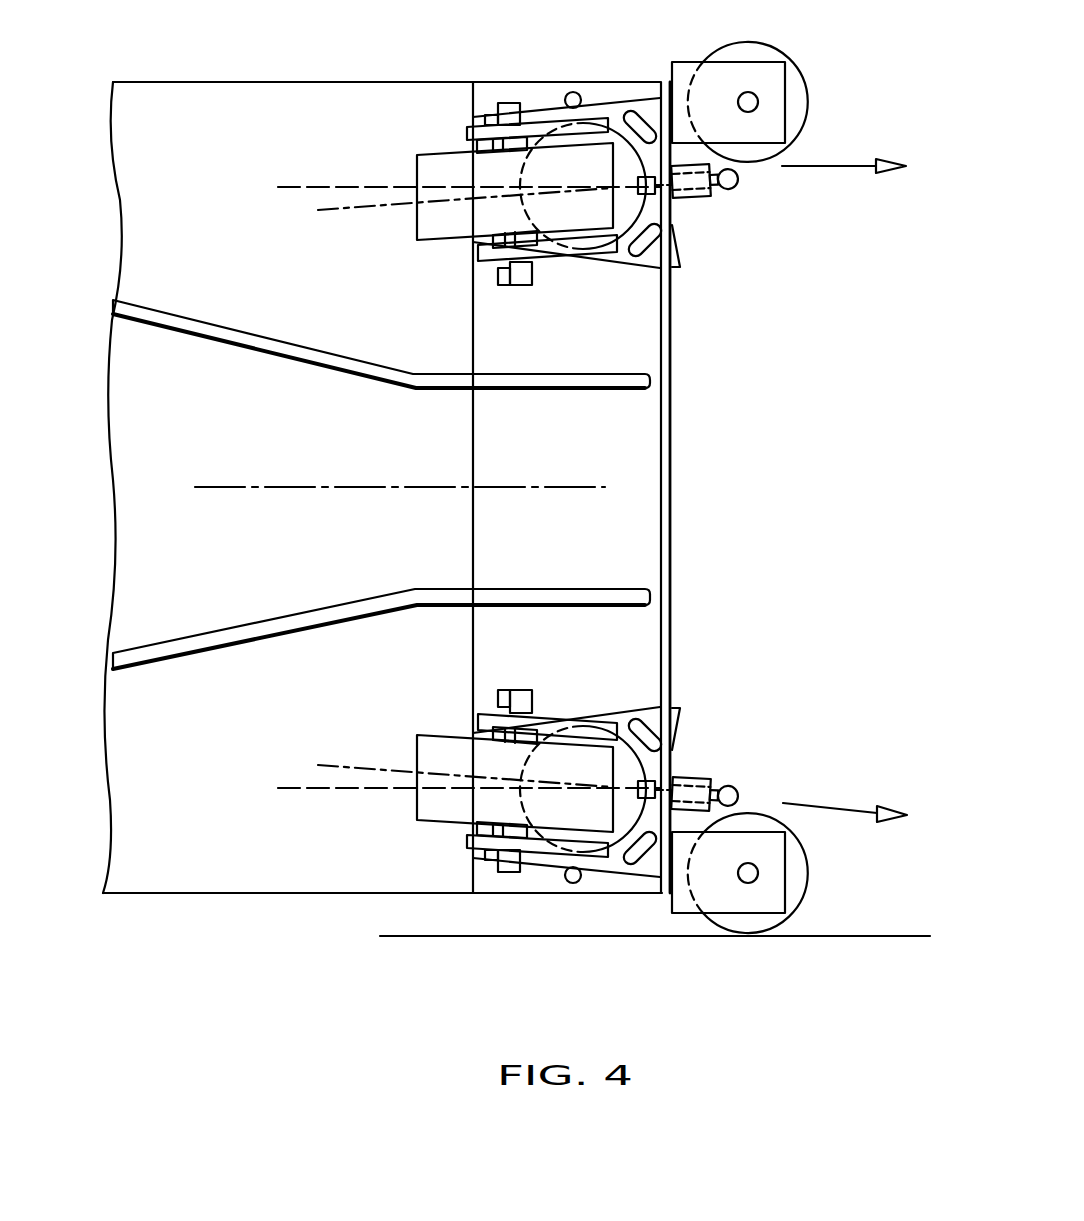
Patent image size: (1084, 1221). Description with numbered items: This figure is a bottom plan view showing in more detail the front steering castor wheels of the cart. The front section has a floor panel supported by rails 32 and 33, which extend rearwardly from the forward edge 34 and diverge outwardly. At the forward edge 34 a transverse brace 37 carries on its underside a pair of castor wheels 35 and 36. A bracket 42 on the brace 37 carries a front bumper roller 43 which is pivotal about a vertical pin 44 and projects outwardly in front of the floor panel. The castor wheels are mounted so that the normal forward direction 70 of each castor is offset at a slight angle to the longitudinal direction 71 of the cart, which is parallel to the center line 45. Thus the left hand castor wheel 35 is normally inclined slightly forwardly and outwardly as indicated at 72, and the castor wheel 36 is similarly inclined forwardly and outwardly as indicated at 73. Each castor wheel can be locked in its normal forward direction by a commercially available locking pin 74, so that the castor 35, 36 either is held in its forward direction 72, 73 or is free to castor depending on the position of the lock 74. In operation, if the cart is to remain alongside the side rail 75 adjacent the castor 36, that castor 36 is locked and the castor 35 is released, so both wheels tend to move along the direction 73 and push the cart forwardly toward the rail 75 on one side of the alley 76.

The rail 32 is at (309, 342).
The rail 33 is at (288, 607).
The forward edge 34 is at (673, 512).
The castor wheel 35 is at (704, 259).
The castor wheel 36 is at (685, 741).
The transverse brace 37 is at (510, 522).
The bracket 42 is at (684, 52).
The front bumper roller 43 is at (812, 97).
The vertical pin 44 is at (752, 98).
The center line 45 is at (313, 476).
The normal forward direction 70 is at (378, 206).
The longitudinal direction 71 is at (335, 176).
The forward and outward direction 72 is at (841, 180).
The forward and outward direction 73 is at (829, 797).
The locking pin 74 is at (715, 204).
The side rail 75 is at (832, 927).
The alley 76 is at (945, 501).